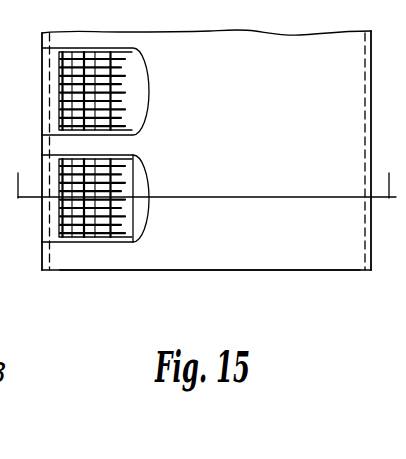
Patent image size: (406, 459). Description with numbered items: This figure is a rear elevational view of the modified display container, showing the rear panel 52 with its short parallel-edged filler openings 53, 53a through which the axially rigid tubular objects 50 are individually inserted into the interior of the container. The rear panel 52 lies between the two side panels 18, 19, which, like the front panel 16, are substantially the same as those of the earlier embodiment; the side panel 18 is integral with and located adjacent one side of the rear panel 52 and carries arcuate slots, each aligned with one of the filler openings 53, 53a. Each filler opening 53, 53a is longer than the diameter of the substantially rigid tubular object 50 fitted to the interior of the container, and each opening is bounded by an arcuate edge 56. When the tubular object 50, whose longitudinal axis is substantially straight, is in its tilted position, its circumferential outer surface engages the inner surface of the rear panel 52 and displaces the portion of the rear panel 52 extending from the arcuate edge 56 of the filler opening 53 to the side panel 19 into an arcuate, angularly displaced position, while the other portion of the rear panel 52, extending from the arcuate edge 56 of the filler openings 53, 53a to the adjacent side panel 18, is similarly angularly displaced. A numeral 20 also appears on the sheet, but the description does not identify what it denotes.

The tubular object 50 is at (0, 126).
The side panel 19 is at (372, 79).
The side panel 18 is at (43, 255).
The rear panel 52 is at (103, 254).
The filler opening 53a is at (138, 88).
The filler opening 53 is at (129, 221).
The arcuate edge 56 is at (178, 176).
The front panel 16 is at (204, 199).
The garment 20 is at (0, 13).